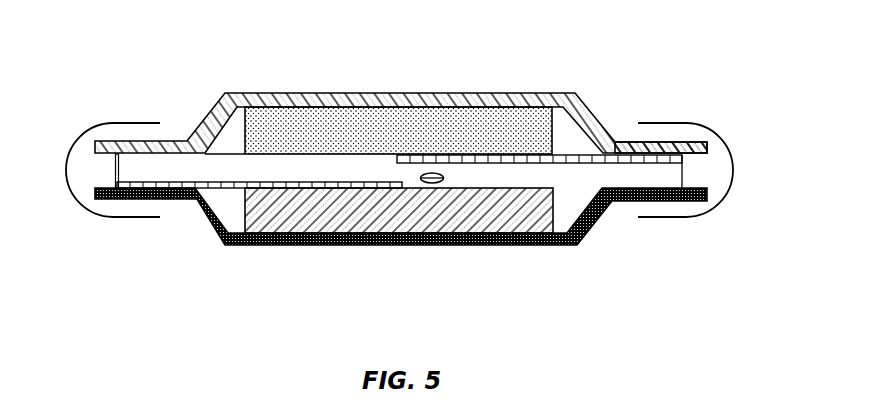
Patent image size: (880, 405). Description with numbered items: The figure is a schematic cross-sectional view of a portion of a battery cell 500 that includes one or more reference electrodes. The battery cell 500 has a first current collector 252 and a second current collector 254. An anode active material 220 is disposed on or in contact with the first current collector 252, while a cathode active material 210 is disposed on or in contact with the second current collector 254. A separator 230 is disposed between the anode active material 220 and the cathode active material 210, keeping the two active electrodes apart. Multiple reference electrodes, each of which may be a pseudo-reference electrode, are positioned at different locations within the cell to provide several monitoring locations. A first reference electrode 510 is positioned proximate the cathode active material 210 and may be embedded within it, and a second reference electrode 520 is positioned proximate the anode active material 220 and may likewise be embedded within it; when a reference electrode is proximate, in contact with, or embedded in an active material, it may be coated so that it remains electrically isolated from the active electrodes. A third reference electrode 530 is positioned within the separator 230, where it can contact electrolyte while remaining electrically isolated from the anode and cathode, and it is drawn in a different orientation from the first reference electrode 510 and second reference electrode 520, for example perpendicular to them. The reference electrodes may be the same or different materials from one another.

The battery cell 500 is at (100, 74).
The cathode active material 210 is at (430, 93).
The anode active material 220 is at (492, 247).
The separator 230 is at (344, 154).
The first current collector 252 is at (707, 204).
The second current collector 254 is at (660, 142).
The first reference electrode 510 is at (683, 161).
The second reference electrode 520 is at (116, 185).
The third reference electrode 530 is at (380, 247).